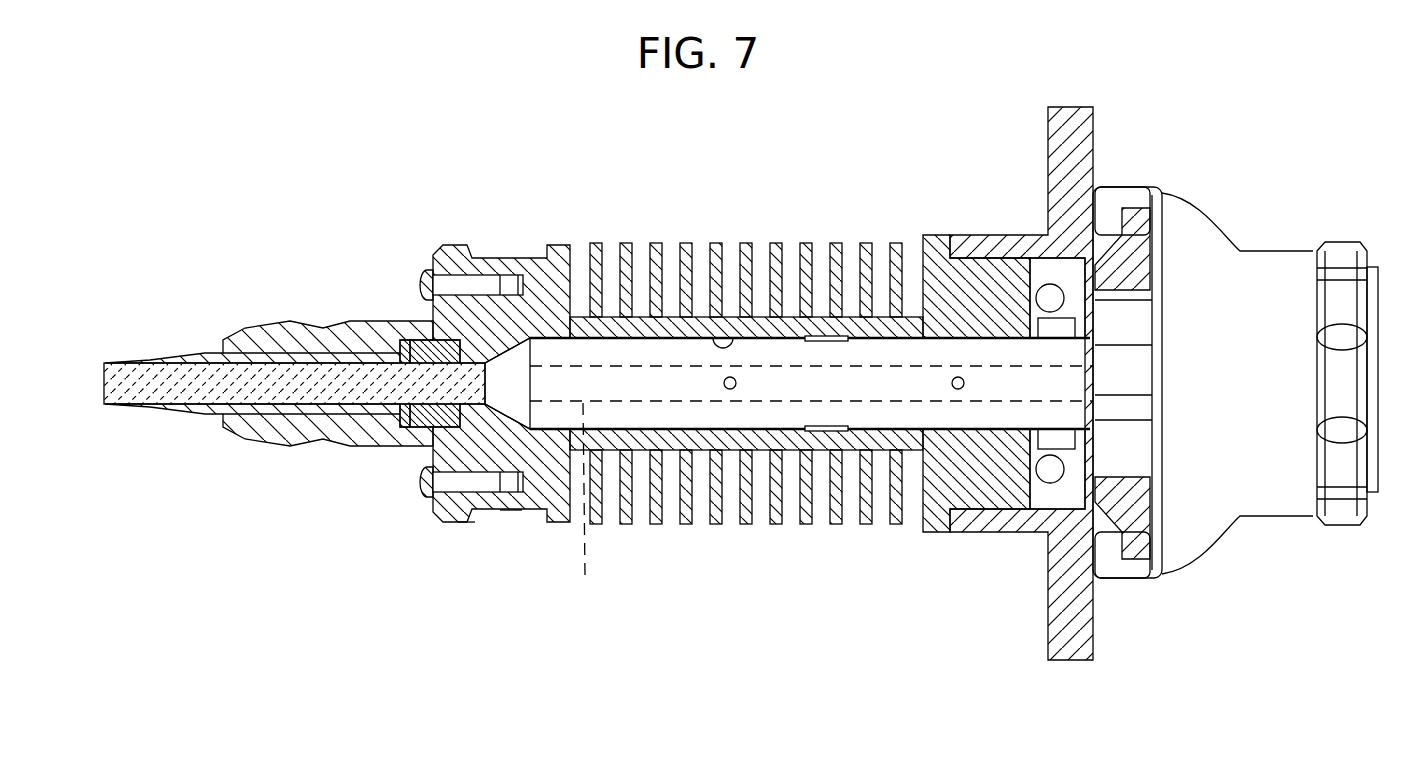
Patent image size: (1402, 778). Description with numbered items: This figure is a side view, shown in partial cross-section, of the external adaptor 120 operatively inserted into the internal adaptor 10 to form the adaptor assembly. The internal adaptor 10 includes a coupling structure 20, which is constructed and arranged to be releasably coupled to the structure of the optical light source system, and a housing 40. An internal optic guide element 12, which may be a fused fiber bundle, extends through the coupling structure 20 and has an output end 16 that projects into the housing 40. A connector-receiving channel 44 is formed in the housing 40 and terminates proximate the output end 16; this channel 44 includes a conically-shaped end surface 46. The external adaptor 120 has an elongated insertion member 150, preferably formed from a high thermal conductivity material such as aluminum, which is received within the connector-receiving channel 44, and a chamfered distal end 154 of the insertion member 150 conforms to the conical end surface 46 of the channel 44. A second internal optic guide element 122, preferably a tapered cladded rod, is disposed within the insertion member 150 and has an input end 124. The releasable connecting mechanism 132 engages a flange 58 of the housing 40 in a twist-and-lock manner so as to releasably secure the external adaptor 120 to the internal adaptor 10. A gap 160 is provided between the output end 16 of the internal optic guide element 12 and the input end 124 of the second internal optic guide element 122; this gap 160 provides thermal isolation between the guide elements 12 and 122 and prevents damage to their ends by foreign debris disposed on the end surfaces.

The internal adaptor 10 is at (468, 236).
The internal optic guide element 12 is at (103, 390).
The output end 16 is at (497, 383).
The coupling structure 20 is at (243, 327).
The housing 40 is at (633, 238).
The connector-receiving channel 44 is at (730, 336).
The conically-shaped end surface 46 is at (511, 553).
The flange 58 is at (1132, 217).
The external adaptor 120 is at (936, 331).
The second internal optic guide element 122 is at (590, 506).
The input end 124 is at (447, 574).
The releasable connecting mechanism 132 is at (1181, 188).
The elongated insertion member 150 is at (675, 430).
The chamfered distal end 154 is at (510, 555).
The gap 160 is at (448, 600).